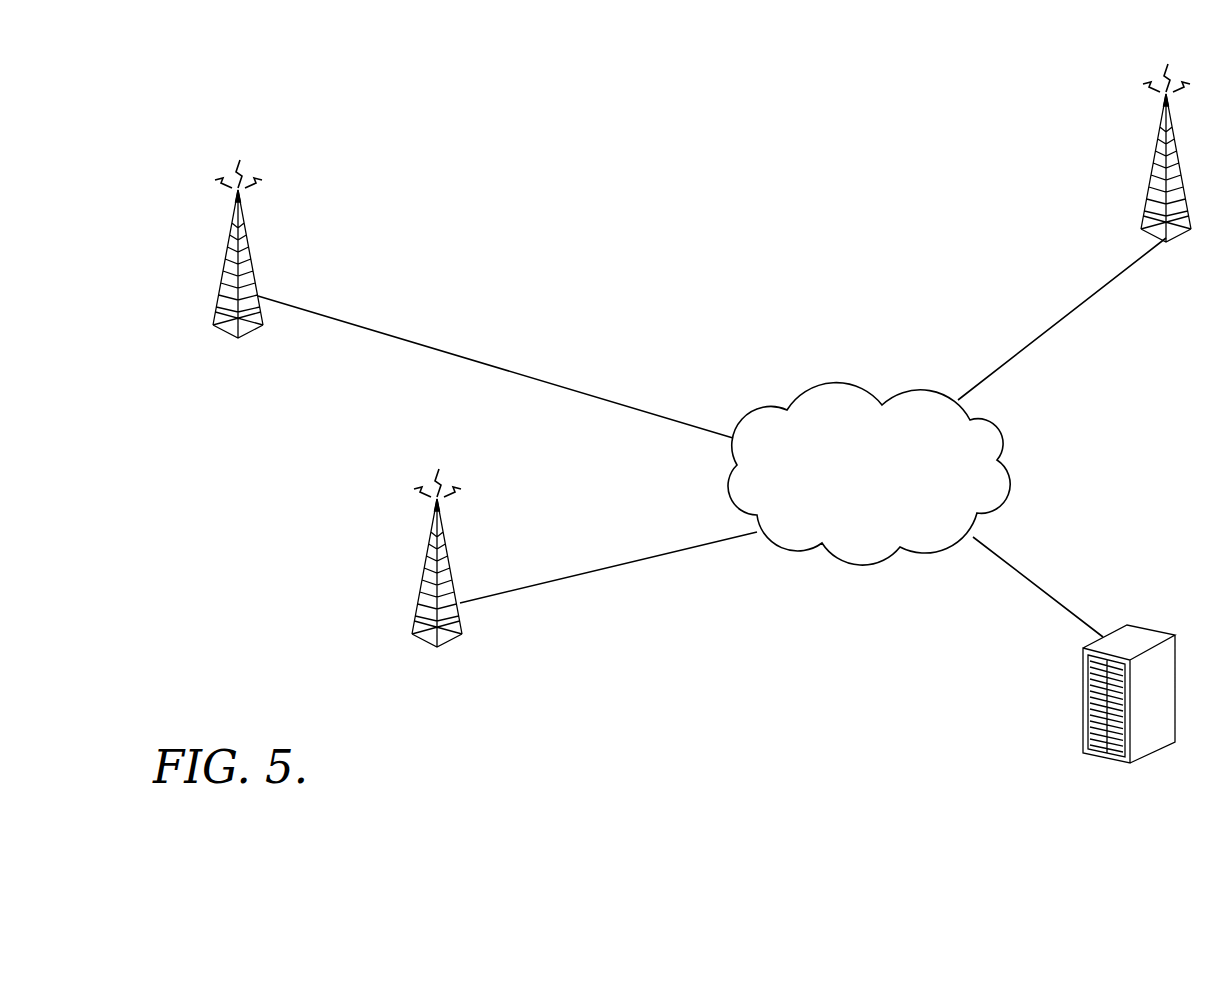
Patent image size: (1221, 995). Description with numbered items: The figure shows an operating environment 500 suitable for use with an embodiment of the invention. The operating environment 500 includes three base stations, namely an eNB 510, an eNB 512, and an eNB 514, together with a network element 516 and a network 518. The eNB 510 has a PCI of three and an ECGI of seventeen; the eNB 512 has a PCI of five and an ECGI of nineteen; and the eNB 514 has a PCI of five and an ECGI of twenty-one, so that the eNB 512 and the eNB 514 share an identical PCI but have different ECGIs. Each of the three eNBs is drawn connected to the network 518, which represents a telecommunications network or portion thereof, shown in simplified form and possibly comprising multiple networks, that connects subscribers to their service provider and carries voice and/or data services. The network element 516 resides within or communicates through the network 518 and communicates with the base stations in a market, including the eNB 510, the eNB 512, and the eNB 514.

The operating environment 500 is at (366, 74).
The eNB 510 is at (421, 583).
The eNB 512 is at (1149, 176).
The eNB 514 is at (223, 275).
The network element 516 is at (1083, 697).
The network 518 is at (825, 385).